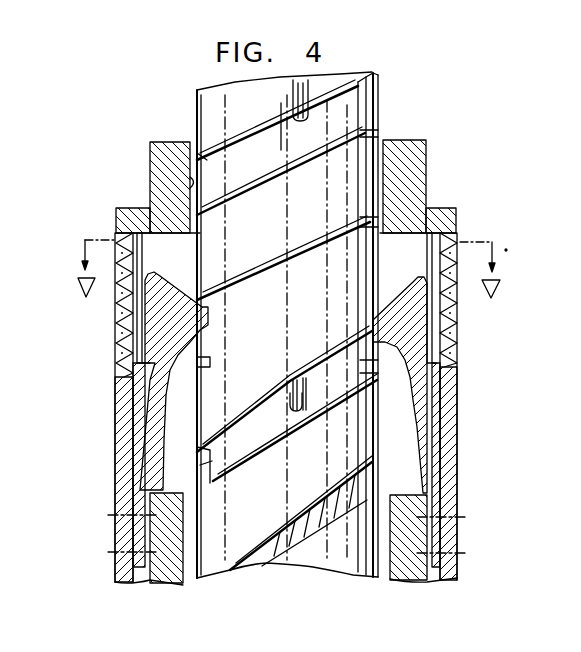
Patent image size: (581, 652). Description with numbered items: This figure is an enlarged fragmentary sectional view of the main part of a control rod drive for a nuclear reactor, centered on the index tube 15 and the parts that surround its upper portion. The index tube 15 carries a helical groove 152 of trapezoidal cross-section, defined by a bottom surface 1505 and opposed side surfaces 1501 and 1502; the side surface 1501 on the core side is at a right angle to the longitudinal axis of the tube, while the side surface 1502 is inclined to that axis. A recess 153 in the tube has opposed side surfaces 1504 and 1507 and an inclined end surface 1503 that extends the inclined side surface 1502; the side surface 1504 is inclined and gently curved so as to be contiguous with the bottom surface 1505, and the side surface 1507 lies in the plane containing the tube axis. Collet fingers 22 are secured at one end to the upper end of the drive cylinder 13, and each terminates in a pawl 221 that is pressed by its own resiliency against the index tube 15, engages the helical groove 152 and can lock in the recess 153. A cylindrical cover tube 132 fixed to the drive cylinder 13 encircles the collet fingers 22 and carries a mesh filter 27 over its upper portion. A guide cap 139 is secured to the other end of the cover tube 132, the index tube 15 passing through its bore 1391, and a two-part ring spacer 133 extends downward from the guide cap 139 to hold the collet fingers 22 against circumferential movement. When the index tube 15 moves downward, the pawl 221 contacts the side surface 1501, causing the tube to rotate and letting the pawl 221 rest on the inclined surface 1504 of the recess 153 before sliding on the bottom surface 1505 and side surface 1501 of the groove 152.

The drive cylinder 13 is at (162, 578).
The index tube 15 is at (370, 133).
The collet fingers 22 is at (422, 432).
The mesh filter 27 is at (447, 316).
The cover tube 132 is at (133, 478).
The ring spacer 133 is at (110, 252).
The guide cap 139 is at (415, 170).
The helical groove 152 is at (142, 500).
The recess 153 is at (250, 432).
The pawl 221 is at (200, 320).
The bore 1391 is at (190, 180).
The side surface 1501 is at (200, 472).
The side surface 1502 is at (252, 482).
The end surface 1503 is at (300, 396).
The side surface 1504 is at (333, 396).
The bottom surface 1505 is at (327, 368).
The side surface 1507 is at (290, 392).